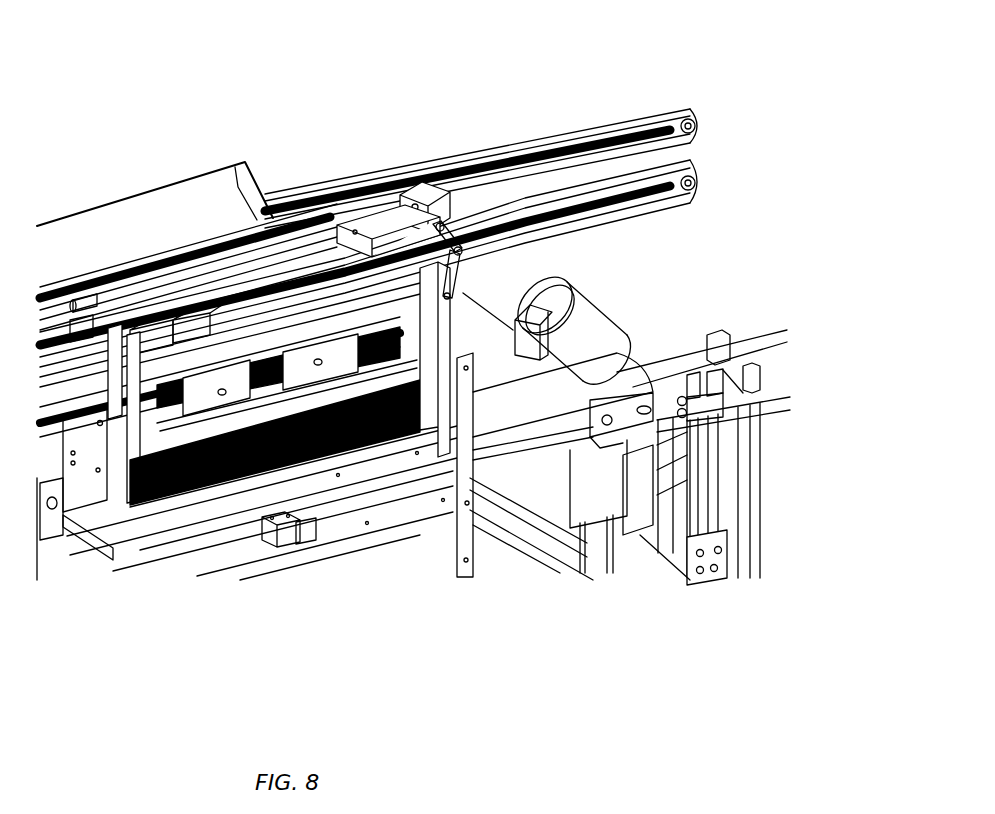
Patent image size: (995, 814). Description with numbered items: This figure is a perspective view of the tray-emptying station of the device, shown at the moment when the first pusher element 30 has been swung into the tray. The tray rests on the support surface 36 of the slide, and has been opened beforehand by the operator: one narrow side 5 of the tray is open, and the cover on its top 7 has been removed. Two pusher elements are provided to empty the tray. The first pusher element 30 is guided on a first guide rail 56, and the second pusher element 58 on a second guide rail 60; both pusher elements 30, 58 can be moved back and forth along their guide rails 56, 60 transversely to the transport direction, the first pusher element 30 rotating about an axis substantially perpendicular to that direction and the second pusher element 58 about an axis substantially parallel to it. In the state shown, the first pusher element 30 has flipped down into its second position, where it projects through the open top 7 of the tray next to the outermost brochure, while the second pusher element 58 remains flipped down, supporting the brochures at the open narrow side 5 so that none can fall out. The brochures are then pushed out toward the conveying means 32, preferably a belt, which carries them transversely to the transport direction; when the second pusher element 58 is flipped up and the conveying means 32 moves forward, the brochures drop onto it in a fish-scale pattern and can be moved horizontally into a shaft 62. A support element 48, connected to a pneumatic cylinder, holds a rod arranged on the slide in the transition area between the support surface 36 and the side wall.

The narrow side 5 is at (417, 423).
The top 7 is at (158, 497).
The first pusher element 30 is at (123, 497).
The conveying means 32 is at (528, 410).
The support surface 36 is at (67, 547).
The support element 48 is at (272, 520).
The first guide rail 56 is at (108, 330).
The second pusher element 58 is at (432, 397).
The second guide rail 60 is at (520, 145).
The shaft 62 is at (670, 400).